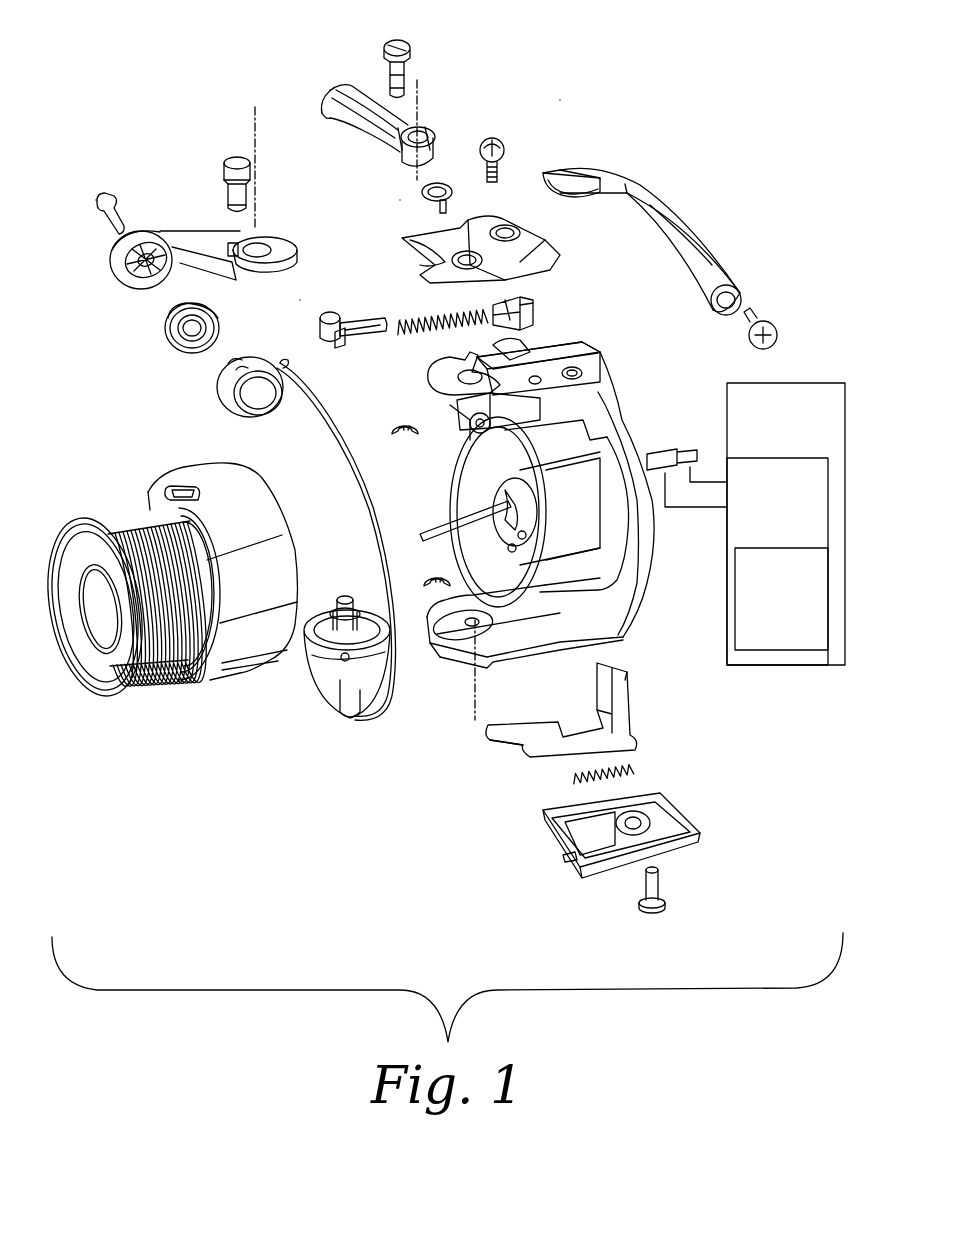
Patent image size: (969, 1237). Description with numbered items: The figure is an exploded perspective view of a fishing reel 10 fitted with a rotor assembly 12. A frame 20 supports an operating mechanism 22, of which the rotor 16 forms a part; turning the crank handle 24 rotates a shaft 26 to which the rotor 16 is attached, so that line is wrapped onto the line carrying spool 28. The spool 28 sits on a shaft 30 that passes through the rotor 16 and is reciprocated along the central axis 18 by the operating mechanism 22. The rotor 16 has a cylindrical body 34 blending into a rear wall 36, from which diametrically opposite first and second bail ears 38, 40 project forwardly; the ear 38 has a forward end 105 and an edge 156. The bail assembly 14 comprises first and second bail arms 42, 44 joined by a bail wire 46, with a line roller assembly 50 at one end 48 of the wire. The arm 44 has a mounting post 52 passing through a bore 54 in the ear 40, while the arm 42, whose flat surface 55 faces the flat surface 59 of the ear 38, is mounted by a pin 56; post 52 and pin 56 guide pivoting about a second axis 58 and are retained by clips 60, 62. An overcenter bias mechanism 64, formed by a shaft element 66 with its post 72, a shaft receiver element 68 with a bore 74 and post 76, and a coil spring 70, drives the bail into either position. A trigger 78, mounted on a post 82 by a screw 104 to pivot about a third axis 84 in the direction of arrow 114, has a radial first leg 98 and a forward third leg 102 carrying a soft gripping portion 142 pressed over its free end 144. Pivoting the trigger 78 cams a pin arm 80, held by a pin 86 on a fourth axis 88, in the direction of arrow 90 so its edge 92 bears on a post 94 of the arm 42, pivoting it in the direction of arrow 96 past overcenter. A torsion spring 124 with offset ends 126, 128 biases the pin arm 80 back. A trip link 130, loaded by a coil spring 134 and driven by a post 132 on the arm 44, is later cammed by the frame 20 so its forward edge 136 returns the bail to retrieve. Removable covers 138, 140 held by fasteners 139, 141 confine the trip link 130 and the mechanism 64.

The fishing reel 10 is at (662, 103).
The rotor assembly 12 is at (550, 106).
The bail assembly 14 is at (288, 307).
The rotor 16 is at (640, 597).
The central axis 18 is at (62, 627).
The frame 20 is at (786, 524).
The operating mechanism 22 is at (665, 416).
The crank handle 24 is at (781, 599).
The shaft 26 is at (650, 462).
The line carrying spool 28 is at (185, 480).
The shaft 30 is at (443, 530).
The cylindrical body 34 is at (595, 472).
The wall 36 is at (598, 528).
The first bail ear 38 is at (560, 345).
The second bail ear 40 is at (573, 640).
The first bail arm 42 is at (275, 243).
The second bail arm 44 is at (310, 673).
The bail wire 46 is at (310, 387).
The end of bail wire 48 is at (277, 357).
The line roller assembly 50 is at (158, 356).
The mounting post 52 is at (348, 618).
The bore 54 is at (432, 650).
The flat surface 55 is at (232, 280).
The pin 56 is at (237, 155).
The second axis 58 is at (257, 130).
The flat surface 59 is at (462, 368).
The clip 60 is at (437, 574).
The clip 62 is at (392, 427).
The overcenter bias mechanism 64 is at (403, 302).
The shaft element 66 is at (347, 326).
The shaft receiver element 68 is at (535, 298).
The coil spring 70 is at (437, 310).
The post 72 is at (328, 318).
The bore 74 is at (565, 298).
The post 76 is at (505, 338).
The trigger 78 is at (675, 203).
The pin arm 80 is at (343, 90).
The post 82 is at (425, 415).
The third axis 84 is at (533, 470).
The pin 86 is at (408, 45).
The fourth axis 88 is at (423, 95).
The arrow 90 is at (330, 42).
The edge 92 is at (377, 110).
The post 94 is at (232, 240).
The arrow 96 is at (183, 123).
The first elongate leg 98 is at (712, 260).
The third elongate leg 102 is at (620, 188).
The screw 104 is at (773, 322).
The forward end 105 is at (440, 425).
The arrow 114 is at (582, 153).
The torsion spring 124 is at (452, 187).
The spring end 126 is at (437, 183).
The spring end 128 is at (446, 203).
The trip link 130 is at (640, 740).
The post 132 is at (330, 622).
The coil spring 134 is at (632, 770).
The forward edge 136 is at (487, 738).
The removable cover 138 is at (688, 842).
The fastener 139 is at (650, 888).
The removable cover 140 is at (530, 215).
The fastener 141 is at (523, 215).
The gripping portion 142 is at (545, 172).
The free end 144 is at (597, 165).
The edge 156 is at (615, 355).